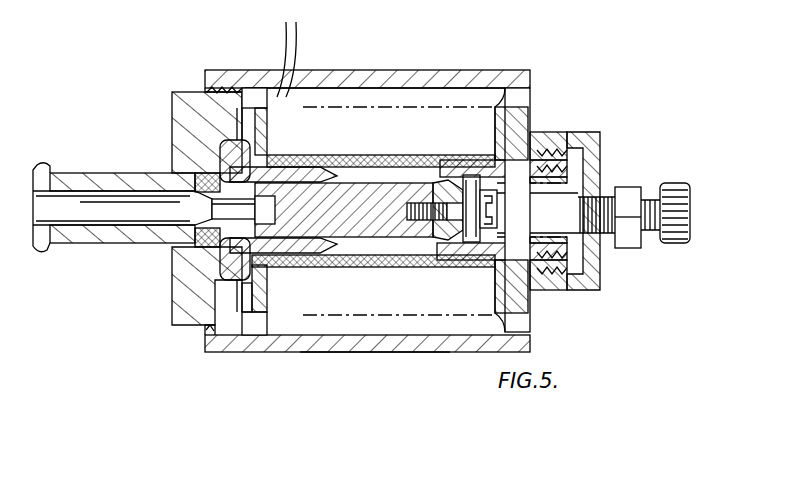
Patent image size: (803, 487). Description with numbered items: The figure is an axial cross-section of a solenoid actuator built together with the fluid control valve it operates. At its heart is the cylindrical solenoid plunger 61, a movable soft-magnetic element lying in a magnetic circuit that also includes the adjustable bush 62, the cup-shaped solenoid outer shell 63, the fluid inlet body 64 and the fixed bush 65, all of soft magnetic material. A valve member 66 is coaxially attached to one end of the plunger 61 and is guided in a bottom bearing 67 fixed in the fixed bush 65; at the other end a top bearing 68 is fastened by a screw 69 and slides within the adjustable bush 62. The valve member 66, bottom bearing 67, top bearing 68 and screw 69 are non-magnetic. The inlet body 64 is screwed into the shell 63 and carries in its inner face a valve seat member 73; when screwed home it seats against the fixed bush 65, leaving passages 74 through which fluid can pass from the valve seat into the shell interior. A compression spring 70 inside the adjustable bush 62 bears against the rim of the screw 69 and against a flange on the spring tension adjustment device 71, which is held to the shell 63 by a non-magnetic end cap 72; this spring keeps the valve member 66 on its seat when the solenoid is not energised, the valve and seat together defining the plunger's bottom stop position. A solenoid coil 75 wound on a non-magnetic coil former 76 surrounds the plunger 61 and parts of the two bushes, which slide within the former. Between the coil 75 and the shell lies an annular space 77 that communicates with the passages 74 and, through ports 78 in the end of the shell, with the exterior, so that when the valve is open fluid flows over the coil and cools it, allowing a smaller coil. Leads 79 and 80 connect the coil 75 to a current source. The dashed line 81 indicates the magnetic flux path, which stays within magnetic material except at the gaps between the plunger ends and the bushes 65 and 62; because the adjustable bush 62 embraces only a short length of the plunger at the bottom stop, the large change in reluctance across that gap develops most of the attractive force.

The solenoid plunger 61 is at (348, 185).
The adjustable bush 62 is at (472, 268).
The solenoid outer shell 63 is at (337, 353).
The fluid inlet body 64 is at (68, 175).
The fixed bush 65 is at (264, 350).
The valve member 66 is at (222, 195).
The bottom bearing 67 is at (228, 175).
The top bearing 68 is at (438, 182).
The screw 69 is at (486, 190).
The compression spring 70 is at (550, 158).
The spring tension adjustment device 71 is at (640, 182).
The end cap 72 is at (555, 292).
The valve seat member 73 is at (200, 237).
The passages 74 is at (205, 140).
The solenoid coil 75 is at (332, 87).
The coil former 76 is at (262, 313).
The annular space 77 is at (348, 92).
The ports 78 is at (531, 88).
The lead 79 is at (284, 34).
The lead 80 is at (316, 40).
The magnetic flux path 81 is at (395, 350).